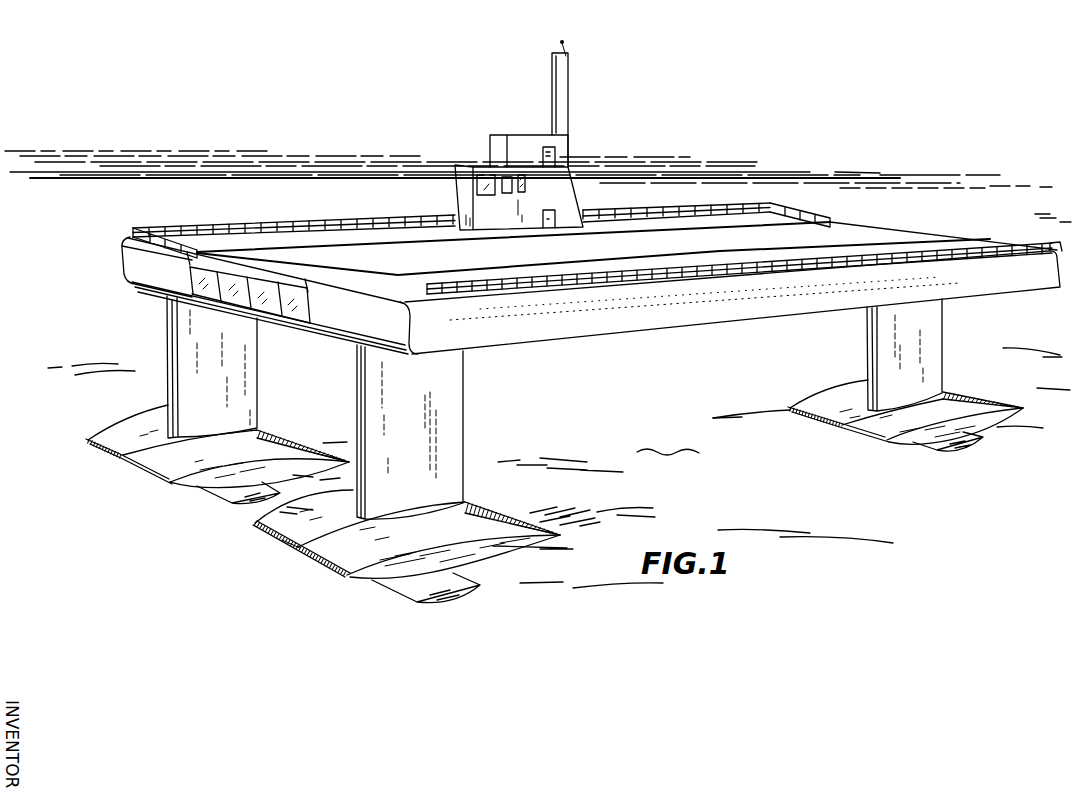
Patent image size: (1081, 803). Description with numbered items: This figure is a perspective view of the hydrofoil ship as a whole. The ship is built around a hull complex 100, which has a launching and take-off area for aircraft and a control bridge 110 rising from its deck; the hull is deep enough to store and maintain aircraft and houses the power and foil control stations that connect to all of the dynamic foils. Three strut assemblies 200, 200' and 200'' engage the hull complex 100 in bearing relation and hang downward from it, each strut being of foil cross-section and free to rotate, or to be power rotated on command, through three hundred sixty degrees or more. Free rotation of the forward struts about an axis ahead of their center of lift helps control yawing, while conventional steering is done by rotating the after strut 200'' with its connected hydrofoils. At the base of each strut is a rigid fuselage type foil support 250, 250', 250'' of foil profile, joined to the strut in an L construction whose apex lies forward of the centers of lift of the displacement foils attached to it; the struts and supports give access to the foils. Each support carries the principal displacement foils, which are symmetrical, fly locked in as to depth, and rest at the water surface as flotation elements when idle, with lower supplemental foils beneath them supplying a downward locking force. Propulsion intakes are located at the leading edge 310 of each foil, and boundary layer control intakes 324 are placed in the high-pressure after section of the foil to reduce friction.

The hull complex 100 is at (245, 219).
The control bridge 110 is at (455, 169).
The strut assembly 200 is at (383, 432).
The strut assembly 200' is at (184, 367).
The after strut assembly 200'' is at (937, 355).
The fuselage type foil support 250 is at (273, 560).
The fuselage type foil support 250' is at (124, 464).
The fuselage type foil support 250'' is at (837, 428).
The leading edge 310 is at (319, 566).
The boundary layer control intake 324 is at (511, 521).